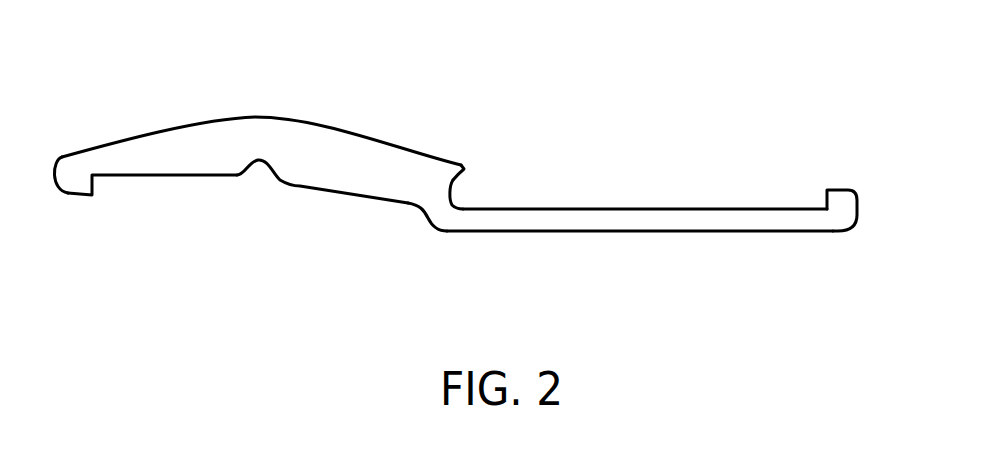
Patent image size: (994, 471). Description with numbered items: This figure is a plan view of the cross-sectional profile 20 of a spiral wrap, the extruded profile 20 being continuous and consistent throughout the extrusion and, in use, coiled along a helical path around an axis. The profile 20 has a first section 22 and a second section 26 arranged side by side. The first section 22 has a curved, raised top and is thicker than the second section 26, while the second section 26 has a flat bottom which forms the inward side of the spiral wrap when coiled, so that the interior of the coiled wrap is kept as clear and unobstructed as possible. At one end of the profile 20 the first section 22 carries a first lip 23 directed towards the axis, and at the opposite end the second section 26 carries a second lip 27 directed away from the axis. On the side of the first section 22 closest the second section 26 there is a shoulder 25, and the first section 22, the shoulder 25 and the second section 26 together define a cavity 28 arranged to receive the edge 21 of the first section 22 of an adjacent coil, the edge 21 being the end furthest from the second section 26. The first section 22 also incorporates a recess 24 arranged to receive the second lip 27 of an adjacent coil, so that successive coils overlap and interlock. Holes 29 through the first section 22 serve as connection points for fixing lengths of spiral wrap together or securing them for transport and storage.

The extruded profile 20 is at (416, 91).
The edge 21 is at (70, 156).
The first section 22 is at (322, 128).
The first lip 23 is at (75, 197).
The recess 24 is at (256, 172).
The shoulder 25 is at (462, 163).
The second section 26 is at (731, 232).
The second lip 27 is at (852, 189).
The cavity 28 is at (460, 197).
The holes 29 is at (428, 218).